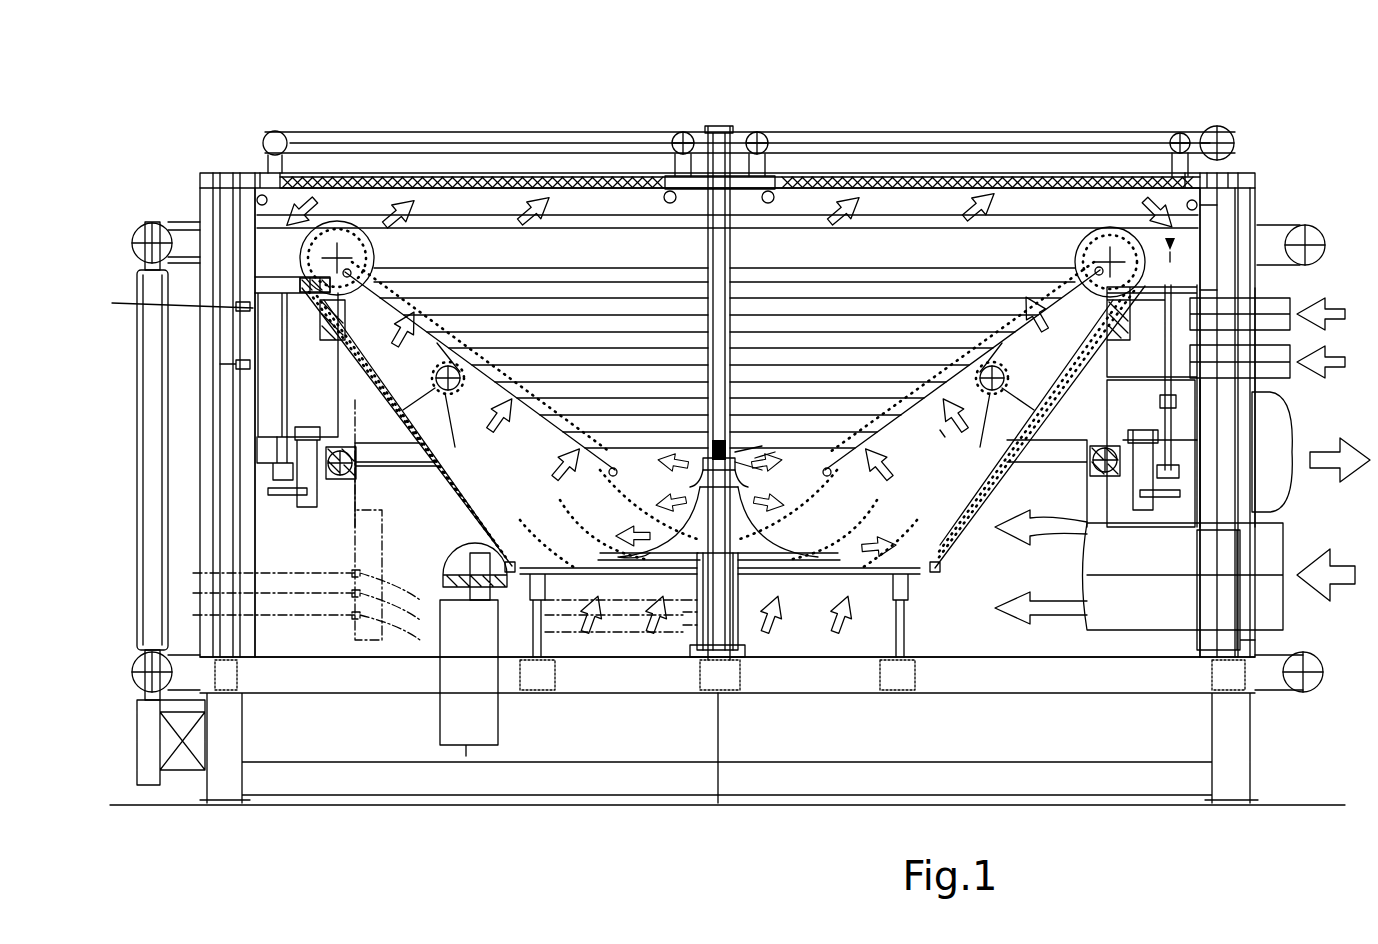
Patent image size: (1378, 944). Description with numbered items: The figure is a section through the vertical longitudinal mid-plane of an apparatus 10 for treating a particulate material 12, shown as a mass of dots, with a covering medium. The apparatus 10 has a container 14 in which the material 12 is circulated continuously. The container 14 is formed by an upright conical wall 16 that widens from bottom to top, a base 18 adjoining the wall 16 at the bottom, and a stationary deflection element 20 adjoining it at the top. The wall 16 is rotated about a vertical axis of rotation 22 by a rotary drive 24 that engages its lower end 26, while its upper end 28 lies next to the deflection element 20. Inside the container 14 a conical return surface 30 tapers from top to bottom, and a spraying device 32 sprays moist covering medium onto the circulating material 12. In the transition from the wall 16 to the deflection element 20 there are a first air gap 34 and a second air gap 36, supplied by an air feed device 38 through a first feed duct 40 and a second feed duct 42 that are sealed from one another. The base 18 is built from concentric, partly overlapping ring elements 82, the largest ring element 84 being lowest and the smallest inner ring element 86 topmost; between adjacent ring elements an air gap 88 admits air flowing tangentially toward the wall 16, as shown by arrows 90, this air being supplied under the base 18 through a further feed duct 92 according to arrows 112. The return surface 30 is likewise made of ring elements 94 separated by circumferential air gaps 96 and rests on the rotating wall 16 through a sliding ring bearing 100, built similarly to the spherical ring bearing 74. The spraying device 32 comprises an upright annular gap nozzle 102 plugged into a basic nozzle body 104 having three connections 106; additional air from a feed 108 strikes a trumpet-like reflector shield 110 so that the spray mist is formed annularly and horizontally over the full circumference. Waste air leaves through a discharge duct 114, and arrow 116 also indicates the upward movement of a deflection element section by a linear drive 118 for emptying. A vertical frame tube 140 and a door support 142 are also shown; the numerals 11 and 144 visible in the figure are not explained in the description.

The apparatus 10 is at (791, 85).
The gas flow direction 11 is at (1178, 263).
The particulate material 12 is at (462, 500).
The container 14 is at (613, 326).
The wall 16 is at (375, 396).
The base 18 is at (580, 715).
The deflection element 20 is at (314, 203).
The axis of rotation 22 is at (722, 738).
The rotary drive 24 is at (458, 720).
The lower end 26 is at (450, 572).
The upper end 28 is at (333, 343).
The return surface 30 is at (493, 345).
The spraying device 32 is at (762, 452).
The first air gap 34 is at (1085, 276).
The second air gap 36 is at (1094, 244).
The air feed device 38 is at (1342, 268).
The first feed duct 40 is at (1286, 372).
The second feed duct 42 is at (1286, 322).
The spherical ring bearing 74 is at (1093, 470).
The ring elements 82 is at (832, 576).
The ring element with the largest diameter 84 is at (920, 576).
The inner ring element 86 is at (745, 600).
The air gap 88 is at (785, 585).
The arrows 90 is at (600, 546).
The feed duct 92 is at (1158, 627).
The ring elements 94 is at (655, 290).
The air gap 96 is at (942, 445).
The sliding ring bearing 100 is at (440, 400).
The annular gap nozzle 102 is at (700, 468).
The basic nozzle body 104 is at (700, 642).
The connections 106 is at (665, 648).
The feed 108 is at (706, 322).
The reflector shield 110 is at (752, 455).
The arrows 112 is at (1040, 622).
The discharge duct 114 is at (1276, 436).
The arrow 116 is at (1196, 215).
The linear drive 118 is at (1186, 478).
The tube 140 is at (140, 525).
The support 142 is at (150, 745).
The rod 144 is at (162, 323).